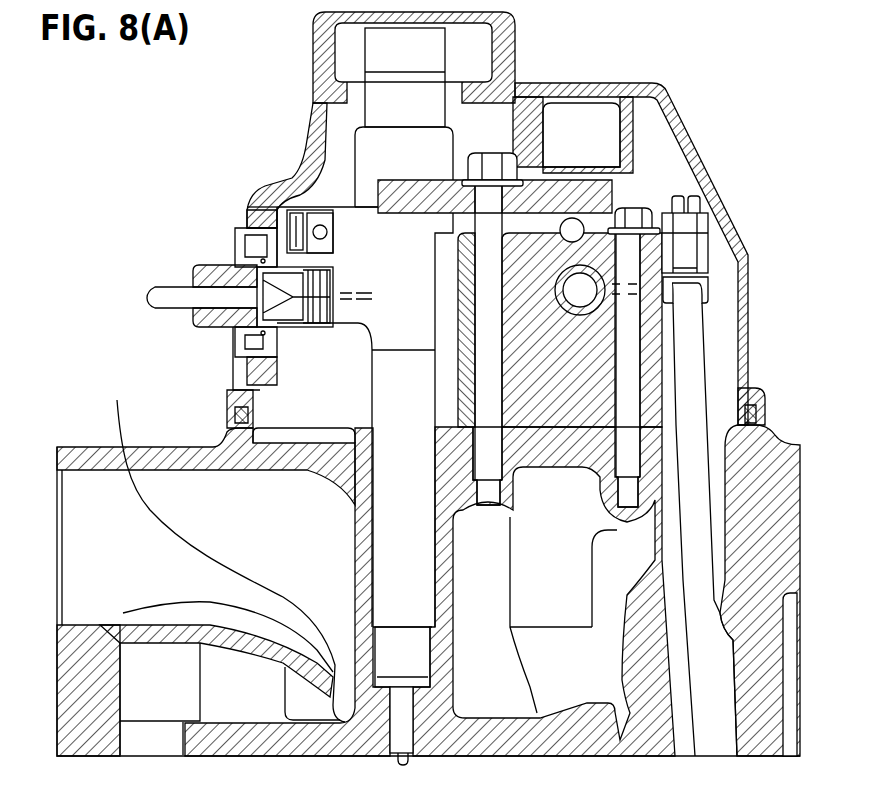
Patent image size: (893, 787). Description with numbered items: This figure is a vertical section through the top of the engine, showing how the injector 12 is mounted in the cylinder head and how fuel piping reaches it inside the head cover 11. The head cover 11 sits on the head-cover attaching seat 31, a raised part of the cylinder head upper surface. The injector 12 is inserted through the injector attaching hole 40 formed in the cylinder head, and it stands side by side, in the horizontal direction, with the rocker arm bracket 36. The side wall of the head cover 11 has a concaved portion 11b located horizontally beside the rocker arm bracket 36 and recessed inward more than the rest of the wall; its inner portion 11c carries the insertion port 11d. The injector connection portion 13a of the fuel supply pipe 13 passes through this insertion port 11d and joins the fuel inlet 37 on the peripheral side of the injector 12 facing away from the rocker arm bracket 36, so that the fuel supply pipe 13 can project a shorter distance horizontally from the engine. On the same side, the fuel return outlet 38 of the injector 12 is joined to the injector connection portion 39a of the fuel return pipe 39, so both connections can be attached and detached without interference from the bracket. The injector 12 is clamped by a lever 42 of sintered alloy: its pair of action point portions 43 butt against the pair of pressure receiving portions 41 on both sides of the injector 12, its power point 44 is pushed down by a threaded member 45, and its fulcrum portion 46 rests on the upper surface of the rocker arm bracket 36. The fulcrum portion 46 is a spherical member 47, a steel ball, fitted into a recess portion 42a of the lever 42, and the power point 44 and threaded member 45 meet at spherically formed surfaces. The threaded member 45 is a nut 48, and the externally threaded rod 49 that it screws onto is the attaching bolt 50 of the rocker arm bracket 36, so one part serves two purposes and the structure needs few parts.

The head cover 11 is at (680, 92).
The concaved portion 11b is at (268, 214).
The inner portion 11c is at (250, 222).
The insertion port 11d is at (240, 245).
The injector 12 is at (395, 401).
The fuel supply pipe 13 is at (172, 300).
The injector connection portion 13a is at (218, 272).
The head-cover attaching seat 31 is at (238, 442).
The rocker arm bracket 36 is at (650, 278).
The fuel inlet 37 is at (262, 302).
The fuel return outlet 38 is at (283, 225).
The fuel return pipe 39 is at (333, 208).
The injector connection portion 39a is at (324, 212).
The injector attaching hole 40 is at (408, 655).
The pressure receiving portion 41 is at (301, 145).
The lever 42 is at (574, 219).
The recess portion 42a is at (569, 226).
The action point portion 43 is at (396, 200).
The power point 44 is at (537, 200).
The threaded member 45 is at (541, 267).
The fulcrum portion 46 is at (710, 319).
The spherical member 47 is at (606, 213).
The nut 48 is at (497, 160).
The externally threaded rod 49 is at (410, 330).
The attaching bolt 50 is at (484, 340).